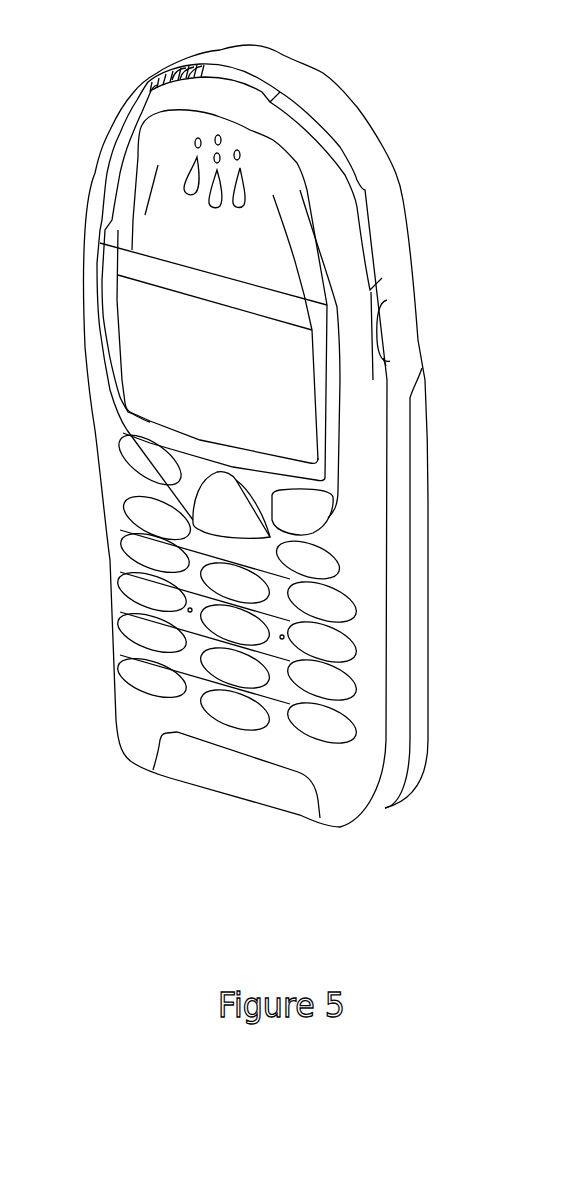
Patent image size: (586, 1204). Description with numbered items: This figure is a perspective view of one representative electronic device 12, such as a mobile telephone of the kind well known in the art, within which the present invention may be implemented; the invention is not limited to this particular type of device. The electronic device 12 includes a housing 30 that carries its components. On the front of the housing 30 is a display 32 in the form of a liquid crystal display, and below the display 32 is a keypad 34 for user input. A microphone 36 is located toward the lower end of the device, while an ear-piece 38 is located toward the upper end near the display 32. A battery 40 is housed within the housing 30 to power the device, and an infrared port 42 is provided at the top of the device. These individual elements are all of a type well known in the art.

The electronic device 12 is at (364, 61).
The housing 30 is at (395, 203).
The display 32 is at (298, 408).
The keypad 34 is at (322, 728).
The microphone 36 is at (178, 765).
The ear-piece 38 is at (203, 168).
The battery 40 is at (420, 710).
The infrared port 42 is at (240, 85).